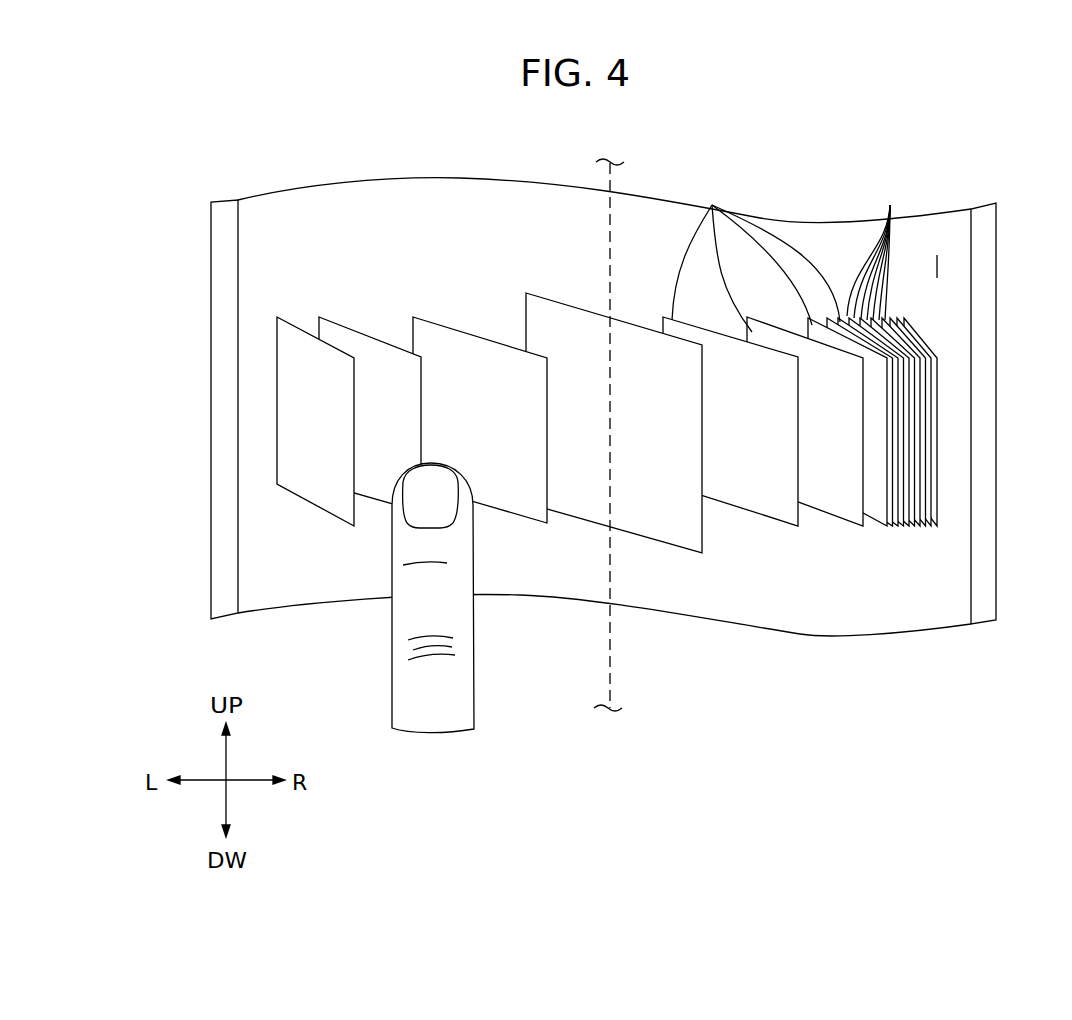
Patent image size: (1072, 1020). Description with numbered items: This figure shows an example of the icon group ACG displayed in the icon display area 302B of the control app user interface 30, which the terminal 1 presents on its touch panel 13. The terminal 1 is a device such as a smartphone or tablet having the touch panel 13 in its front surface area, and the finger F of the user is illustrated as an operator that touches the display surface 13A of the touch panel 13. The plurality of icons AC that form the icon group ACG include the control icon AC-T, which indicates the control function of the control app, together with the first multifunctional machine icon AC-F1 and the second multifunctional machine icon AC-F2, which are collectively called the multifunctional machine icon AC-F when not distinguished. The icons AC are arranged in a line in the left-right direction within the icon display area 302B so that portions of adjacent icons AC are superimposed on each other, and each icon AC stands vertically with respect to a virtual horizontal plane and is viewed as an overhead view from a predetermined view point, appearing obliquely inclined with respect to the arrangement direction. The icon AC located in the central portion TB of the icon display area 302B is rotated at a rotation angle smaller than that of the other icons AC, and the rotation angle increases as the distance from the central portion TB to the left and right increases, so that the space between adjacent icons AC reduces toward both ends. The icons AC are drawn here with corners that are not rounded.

The terminal 1 is at (600, 407).
The touch panel 13 is at (972, 238).
The display surface 13A is at (937, 267).
The control app user interface 30 is at (278, 236).
The icon display area 302B is at (604, 352).
The icon AC is at (468, 400).
The control icon AC-T is at (526, 318).
The multifunctional machine icon AC-F is at (852, 339).
The first multifunctional machine icon AC-F1 is at (712, 206).
The second multifunctional machine icon AC-F2 is at (890, 216).
The icon group ACG is at (938, 349).
The central portion TB is at (612, 660).
The finger F is at (450, 697).